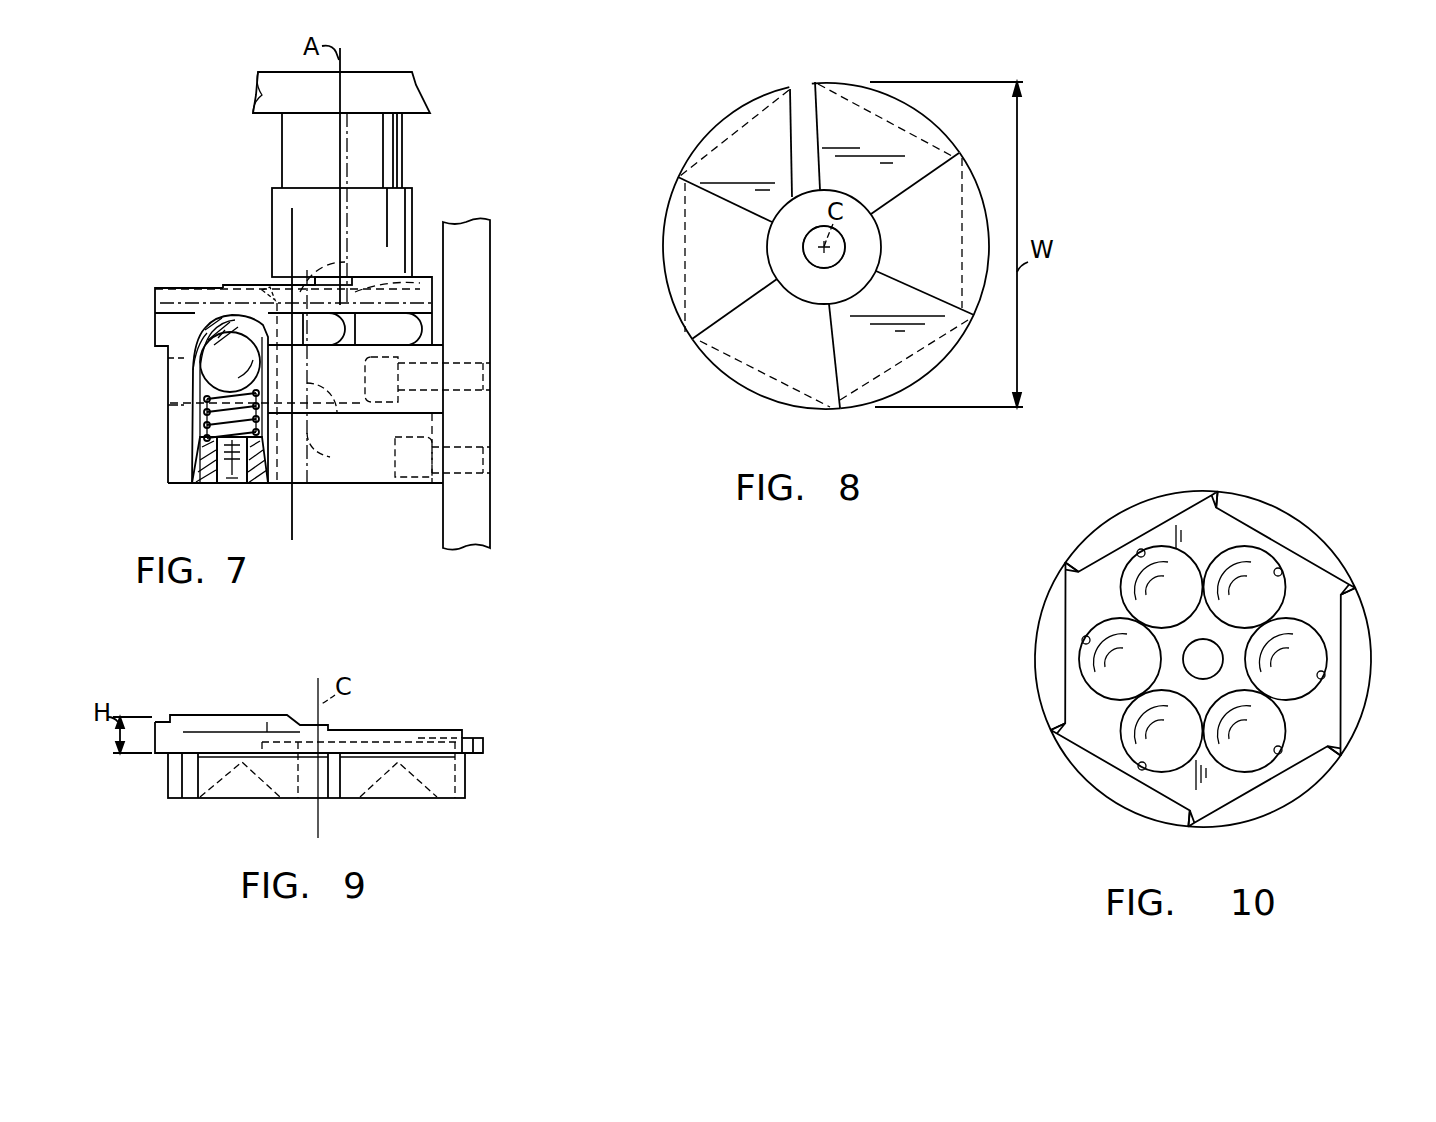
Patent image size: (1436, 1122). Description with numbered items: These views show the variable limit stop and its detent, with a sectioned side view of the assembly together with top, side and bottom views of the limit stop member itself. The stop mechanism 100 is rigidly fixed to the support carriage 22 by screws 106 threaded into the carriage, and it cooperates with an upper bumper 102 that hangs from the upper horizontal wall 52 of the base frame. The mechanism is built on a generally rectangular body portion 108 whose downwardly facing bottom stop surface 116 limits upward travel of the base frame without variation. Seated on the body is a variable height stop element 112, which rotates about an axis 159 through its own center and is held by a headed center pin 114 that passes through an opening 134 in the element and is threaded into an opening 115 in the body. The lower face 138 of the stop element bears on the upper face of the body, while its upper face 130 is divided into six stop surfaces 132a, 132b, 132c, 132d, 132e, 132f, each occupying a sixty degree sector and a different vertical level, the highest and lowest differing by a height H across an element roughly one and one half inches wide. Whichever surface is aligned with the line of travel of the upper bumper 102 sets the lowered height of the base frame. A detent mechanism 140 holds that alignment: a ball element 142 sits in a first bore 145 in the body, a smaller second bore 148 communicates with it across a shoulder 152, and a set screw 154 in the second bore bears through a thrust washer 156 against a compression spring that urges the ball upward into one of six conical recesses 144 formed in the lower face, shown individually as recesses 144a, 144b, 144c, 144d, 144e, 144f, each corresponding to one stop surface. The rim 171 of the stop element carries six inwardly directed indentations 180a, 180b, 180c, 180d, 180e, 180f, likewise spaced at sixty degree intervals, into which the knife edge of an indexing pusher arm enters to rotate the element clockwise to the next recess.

In FIG. 7, the support carriage 22 is at (482, 262).
In FIG. 7, the upper horizontal wall 52 is at (383, 75).
In FIG. 7, the stop mechanism 100 is at (188, 232).
In FIG. 7, the upper bumper 102 is at (396, 150).
In FIG. 7, the screws 106 is at (408, 518).
In FIG. 7, the body portion 108 is at (368, 502).
In FIG. 7, the variable height stop element 112 is at (153, 298).
In FIG. 8, the variable height stop element 112 is at (678, 145).
In FIG. 9, the variable height stop element 112 is at (474, 790).
In FIG. 10, the variable height stop element 112 is at (1305, 506).
In FIG. 7, the center pin 114 is at (334, 412).
In FIG. 7, the opening 115 is at (368, 490).
In FIG. 7, the bottom stop surface 116 is at (315, 487).
In FIG. 7, the upper face 130 is at (250, 277).
In FIG. 9, the upper face 130 is at (385, 722).
In FIG. 8, the stop surface 132a is at (912, 120).
In FIG. 8, the stop surface 132b is at (735, 118).
In FIG. 8, the stop surface 132c is at (672, 240).
In FIG. 8, the stop surface 132d is at (745, 388).
In FIG. 8, the stop surface 132e is at (935, 358).
In FIG. 8, the stop surface 132f is at (1000, 210).
In FIG. 7, the opening 134 is at (332, 266).
In FIG. 8, the opening 134 is at (804, 244).
In FIG. 7, the lower face 138 is at (160, 346).
In FIG. 7, the detent mechanism 140 is at (190, 486).
In FIG. 7, the ball element 142 is at (185, 370).
In FIG. 7, the conical recess 144 is at (218, 322).
In FIG. 10, the conical recess 144a is at (1140, 551).
In FIG. 10, the conical recess 144b is at (1086, 641).
In FIG. 9, the conical recess 144c is at (212, 795).
In FIG. 10, the conical recess 144c is at (1143, 766).
In FIG. 9, the conical recess 144d is at (372, 795).
In FIG. 10, the conical recess 144d is at (1280, 751).
In FIG. 10, the conical recess 144e is at (1323, 672).
In FIG. 10, the conical recess 144f is at (1280, 574).
In FIG. 7, the first bore 145 is at (400, 376).
In FIG. 7, the second bore 148 is at (233, 485).
In FIG. 7, the shoulder 152 is at (197, 442).
In FIG. 7, the set screw 154 is at (192, 476).
In FIG. 7, the thrust washer 156 is at (197, 418).
In FIG. 7, the axis 159 is at (283, 222).
In FIG. 9, the rim 171 is at (485, 748).
In FIG. 10, the rim 171 is at (1376, 700).
In FIG. 8, the indentation 180a is at (813, 82).
In FIG. 10, the indentation 180a is at (1218, 506).
In FIG. 8, the indentation 180b is at (676, 178).
In FIG. 10, the indentation 180b is at (1077, 572).
In FIG. 8, the indentation 180c is at (687, 342).
In FIG. 10, the indentation 180c is at (1059, 724).
In FIG. 8, the indentation 180d is at (838, 410).
In FIG. 10, the indentation 180d is at (1188, 824).
In FIG. 8, the indentation 180e is at (975, 312).
In FIG. 10, the indentation 180e is at (1335, 750).
In FIG. 8, the indentation 180f is at (960, 154).
In FIG. 10, the indentation 180f is at (1361, 593).